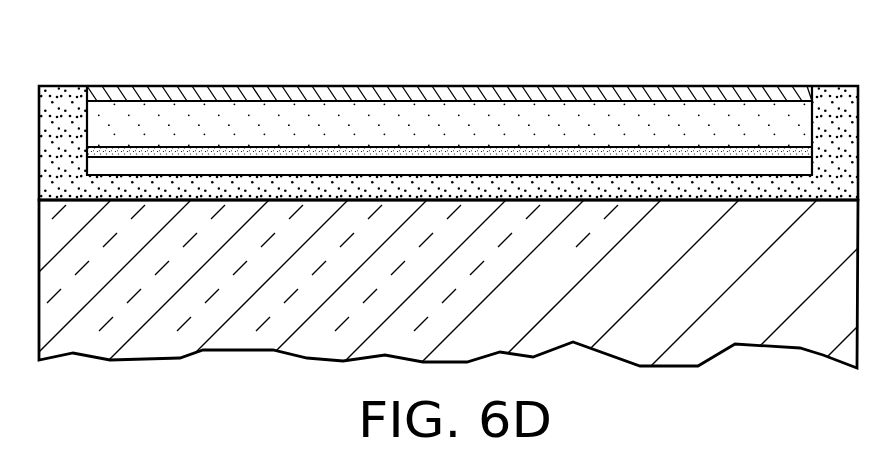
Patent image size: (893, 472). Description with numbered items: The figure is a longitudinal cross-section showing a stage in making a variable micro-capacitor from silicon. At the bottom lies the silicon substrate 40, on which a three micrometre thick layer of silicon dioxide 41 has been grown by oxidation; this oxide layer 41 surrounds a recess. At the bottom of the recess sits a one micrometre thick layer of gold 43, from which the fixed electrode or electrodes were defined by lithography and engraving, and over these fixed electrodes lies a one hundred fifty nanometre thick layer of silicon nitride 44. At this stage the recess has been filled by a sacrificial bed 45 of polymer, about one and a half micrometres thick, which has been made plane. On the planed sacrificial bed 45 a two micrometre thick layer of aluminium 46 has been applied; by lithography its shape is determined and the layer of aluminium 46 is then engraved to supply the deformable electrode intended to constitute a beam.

The substrate 40 is at (760, 327).
The layer of silicon dioxide 41 is at (244, 184).
The layer of gold 43 is at (715, 175).
The layer of silicon nitride 44 is at (223, 146).
The sacrificial bed 45 is at (638, 123).
The layer of aluminium 46 is at (150, 87).